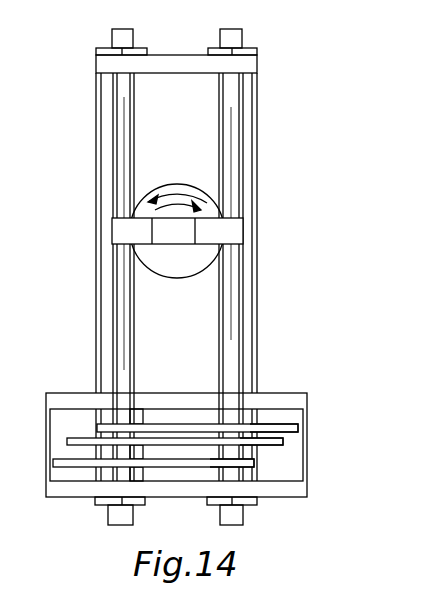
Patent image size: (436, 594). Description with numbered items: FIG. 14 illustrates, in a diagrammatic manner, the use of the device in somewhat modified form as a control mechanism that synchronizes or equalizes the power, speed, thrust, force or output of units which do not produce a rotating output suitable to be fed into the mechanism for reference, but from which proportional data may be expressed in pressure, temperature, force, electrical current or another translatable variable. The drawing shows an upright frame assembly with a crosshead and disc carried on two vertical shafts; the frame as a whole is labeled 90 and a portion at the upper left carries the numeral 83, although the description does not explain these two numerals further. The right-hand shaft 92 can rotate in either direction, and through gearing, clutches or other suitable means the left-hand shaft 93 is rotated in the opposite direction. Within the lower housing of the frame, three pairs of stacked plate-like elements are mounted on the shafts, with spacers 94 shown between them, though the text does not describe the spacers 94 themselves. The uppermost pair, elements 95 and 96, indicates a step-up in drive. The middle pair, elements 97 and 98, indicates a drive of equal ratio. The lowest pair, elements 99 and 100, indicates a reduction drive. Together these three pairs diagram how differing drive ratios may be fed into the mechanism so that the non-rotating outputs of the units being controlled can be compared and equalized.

The frame member 83 is at (5, 299).
The press frame 90 is at (153, 276).
The shaft 92 is at (243, 310).
The shaft 93 is at (134, 323).
The spacers 94 is at (143, 475).
The step-up drive element 95 is at (97, 428).
The step-up drive element 96 is at (297, 424).
The equal-ratio drive element 97 is at (67, 442).
The equal-ratio drive element 98 is at (283, 442).
The reduction drive element 99 is at (255, 462).
The reduction drive element 100 is at (70, 467).